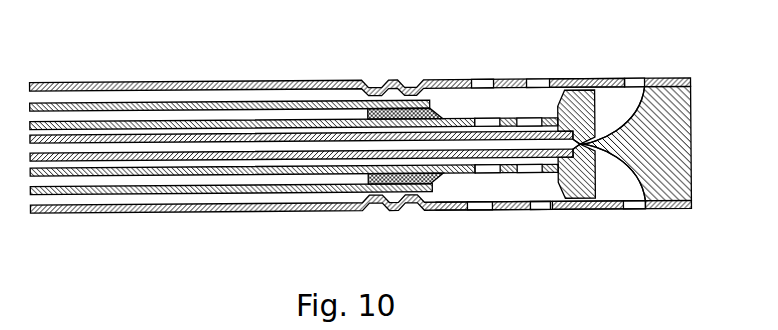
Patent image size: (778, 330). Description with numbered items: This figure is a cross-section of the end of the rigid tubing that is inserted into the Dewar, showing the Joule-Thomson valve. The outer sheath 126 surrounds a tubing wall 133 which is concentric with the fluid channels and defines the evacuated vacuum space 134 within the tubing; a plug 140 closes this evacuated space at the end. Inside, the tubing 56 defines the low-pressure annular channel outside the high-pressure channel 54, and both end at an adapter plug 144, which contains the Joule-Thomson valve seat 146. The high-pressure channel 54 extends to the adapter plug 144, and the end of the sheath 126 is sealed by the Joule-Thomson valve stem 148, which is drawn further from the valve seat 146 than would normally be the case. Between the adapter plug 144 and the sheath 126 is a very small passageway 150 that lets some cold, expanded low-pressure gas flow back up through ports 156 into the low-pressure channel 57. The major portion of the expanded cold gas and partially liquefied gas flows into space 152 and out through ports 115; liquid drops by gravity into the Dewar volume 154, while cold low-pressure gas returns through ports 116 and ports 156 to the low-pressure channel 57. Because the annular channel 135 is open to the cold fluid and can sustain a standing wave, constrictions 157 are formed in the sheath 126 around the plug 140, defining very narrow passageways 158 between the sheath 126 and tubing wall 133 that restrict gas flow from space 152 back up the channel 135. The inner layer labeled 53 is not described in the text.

The sheath 126 is at (40, 82).
The annular channel 135 is at (100, 102).
The tubing wall 133 is at (165, 107).
The vacuum space 134 is at (217, 115).
The constrictions 157 is at (398, 84).
The narrow passageways 158 is at (424, 92).
The plug 140 is at (432, 112).
The ports 156 is at (526, 120).
The space 152 is at (617, 102).
The Joule-Thomson valve seat 146 is at (594, 138).
The Joule-Thomson valve stem 148 is at (677, 112).
The adapter plug 144 is at (585, 196).
The passageway 150 is at (583, 180).
The ports 116 is at (478, 211).
The ports 115 is at (633, 208).
The Dewar volume 154 is at (738, 232).
The optical fiber 53 is at (107, 147).
The high-pressure channel 54 is at (155, 153).
The low-pressure channel 57 is at (195, 163).
The tubing 56 is at (237, 170).